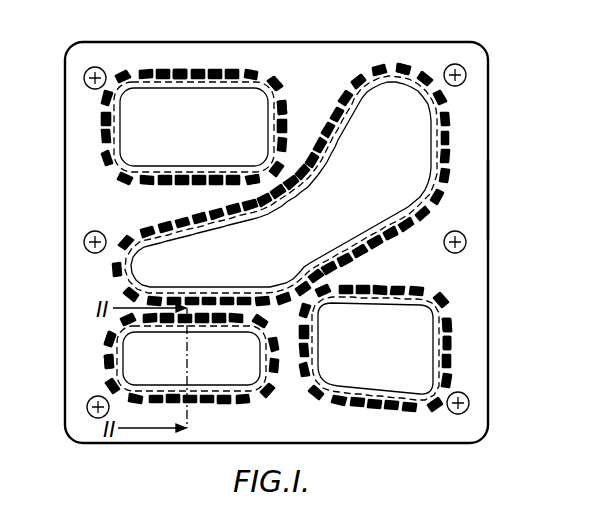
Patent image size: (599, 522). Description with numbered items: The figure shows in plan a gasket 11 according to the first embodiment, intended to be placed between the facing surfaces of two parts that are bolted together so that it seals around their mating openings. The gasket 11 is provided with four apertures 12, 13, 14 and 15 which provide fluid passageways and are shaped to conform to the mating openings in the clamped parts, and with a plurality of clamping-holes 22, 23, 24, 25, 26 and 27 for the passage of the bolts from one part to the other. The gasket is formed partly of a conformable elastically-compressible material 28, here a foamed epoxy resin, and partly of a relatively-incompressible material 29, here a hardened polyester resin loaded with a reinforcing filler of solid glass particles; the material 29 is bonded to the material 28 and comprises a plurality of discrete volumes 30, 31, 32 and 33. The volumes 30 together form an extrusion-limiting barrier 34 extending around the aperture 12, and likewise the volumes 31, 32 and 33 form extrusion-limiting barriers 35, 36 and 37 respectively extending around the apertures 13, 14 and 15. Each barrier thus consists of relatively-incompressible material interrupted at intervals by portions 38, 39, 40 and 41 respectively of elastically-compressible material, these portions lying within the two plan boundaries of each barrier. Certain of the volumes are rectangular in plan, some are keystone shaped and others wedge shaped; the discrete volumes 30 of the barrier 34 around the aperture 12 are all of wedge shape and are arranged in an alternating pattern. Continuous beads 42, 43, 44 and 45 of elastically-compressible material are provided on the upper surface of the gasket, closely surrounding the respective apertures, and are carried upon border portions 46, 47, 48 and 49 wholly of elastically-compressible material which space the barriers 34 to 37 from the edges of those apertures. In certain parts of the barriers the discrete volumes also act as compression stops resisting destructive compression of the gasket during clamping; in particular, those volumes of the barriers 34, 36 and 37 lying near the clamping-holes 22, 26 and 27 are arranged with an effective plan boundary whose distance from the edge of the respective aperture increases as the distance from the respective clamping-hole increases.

The gasket 11 is at (488, 90).
The aperture 12 is at (207, 99).
The aperture 13 is at (325, 160).
The aperture 14 is at (150, 378).
The aperture 15 is at (419, 364).
The clamping-hole 22 is at (84, 76).
The clamping-hole 23 is at (457, 64).
The clamping-hole 24 is at (84, 242).
The clamping-hole 25 is at (466, 248).
The clamping-hole 26 is at (88, 411).
The clamping-hole 27 is at (470, 401).
The conformable elastically-compressible material 28 is at (478, 201).
The relatively-incompressible material 29 is at (447, 171).
The discrete volumes 30 is at (244, 72).
The discrete volumes 31 is at (400, 64).
The discrete volumes 32 is at (106, 345).
The discrete volumes 33 is at (451, 324).
The extrusion-limiting barrier 34 is at (181, 71).
The extrusion-limiting barrier 35 is at (351, 80).
The extrusion-limiting barrier 36 is at (106, 370).
The extrusion-limiting barrier 37 is at (452, 346).
The portions of elastically-compressible material 38 is at (287, 101).
The portions of elastically-compressible material 39 is at (395, 224).
The portions of elastically-compressible material 40 is at (204, 404).
The portions of elastically-compressible material 41 is at (352, 409).
The continuous bead 42 is at (221, 90).
The continuous bead 43 is at (256, 215).
The continuous bead 44 is at (148, 330).
The continuous bead 45 is at (398, 300).
The border portion 46 is at (270, 149).
The border portion 47 is at (437, 118).
The border portion 48 is at (264, 362).
The border portion 49 is at (388, 404).